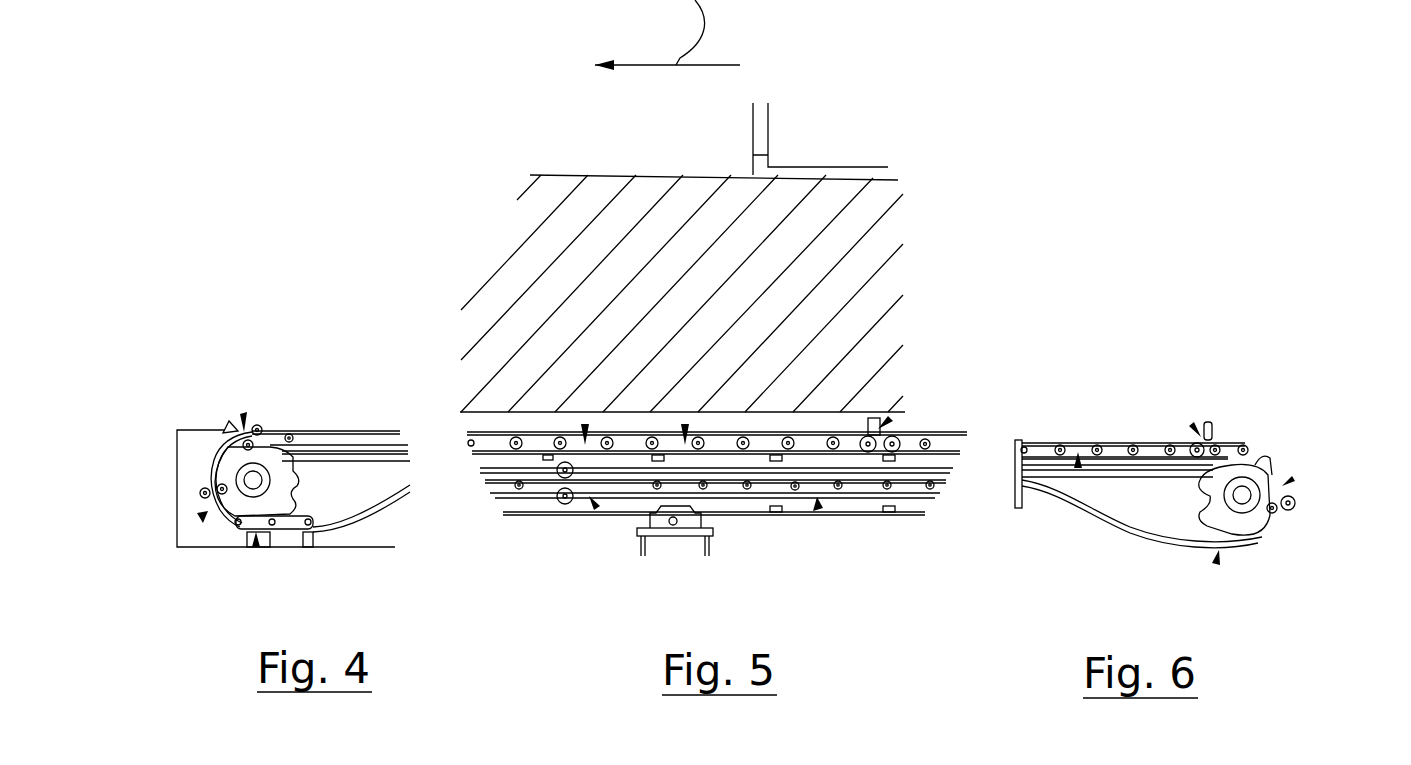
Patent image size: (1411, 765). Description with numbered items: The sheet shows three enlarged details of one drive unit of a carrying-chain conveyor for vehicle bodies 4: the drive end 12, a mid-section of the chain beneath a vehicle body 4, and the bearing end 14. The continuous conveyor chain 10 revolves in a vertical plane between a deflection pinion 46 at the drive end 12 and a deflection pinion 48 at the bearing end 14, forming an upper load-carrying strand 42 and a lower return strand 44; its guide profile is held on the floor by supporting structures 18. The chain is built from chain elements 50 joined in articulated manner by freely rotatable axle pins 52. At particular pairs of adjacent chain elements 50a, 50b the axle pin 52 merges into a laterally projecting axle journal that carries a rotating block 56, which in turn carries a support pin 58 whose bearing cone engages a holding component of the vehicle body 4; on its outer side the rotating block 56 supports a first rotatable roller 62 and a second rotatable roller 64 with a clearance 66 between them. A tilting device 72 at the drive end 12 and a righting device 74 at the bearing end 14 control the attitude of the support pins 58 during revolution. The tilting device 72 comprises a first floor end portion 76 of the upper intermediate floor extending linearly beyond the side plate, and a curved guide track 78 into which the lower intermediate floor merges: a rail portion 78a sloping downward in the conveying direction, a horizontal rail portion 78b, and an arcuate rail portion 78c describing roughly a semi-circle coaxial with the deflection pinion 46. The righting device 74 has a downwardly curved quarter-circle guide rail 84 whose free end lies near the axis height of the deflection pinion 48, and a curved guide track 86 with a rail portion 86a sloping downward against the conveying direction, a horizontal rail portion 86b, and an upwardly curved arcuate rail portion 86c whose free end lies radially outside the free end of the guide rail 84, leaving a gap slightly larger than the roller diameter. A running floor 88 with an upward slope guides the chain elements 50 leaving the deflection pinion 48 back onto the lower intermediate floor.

In FIG. 5, the vehicle body 4 is at (880, 202).
In FIG. 5, the conveyor chain 10 is at (585, 440).
In FIG. 6, the conveyor chain 10 is at (1078, 470).
In FIG. 4, the drive end 12 is at (265, 210).
In FIG. 6, the bearing end 14 is at (1188, 250).
In FIG. 5, the supporting structure 18 is at (691, 538).
In FIG. 5, the load-carrying strand 42 is at (686, 440).
In FIG. 5, the return strand 44 is at (820, 508).
In FIG. 4, the deflection pinion 46 is at (260, 425).
In FIG. 6, the deflection pinion 48 is at (1240, 447).
In FIG. 5, the chain element 50 is at (762, 518).
In FIG. 4, the chain element 50a is at (240, 440).
In FIG. 5, the chain element 50a is at (862, 300).
In FIG. 6, the chain element 50a is at (1178, 447).
In FIG. 4, the chain element 50b is at (273, 428).
In FIG. 5, the chain element 50b is at (915, 450).
In FIG. 6, the chain element 50b is at (1230, 447).
In FIG. 4, the axle pin 52 is at (271, 528).
In FIG. 5, the axle pin 52 is at (652, 437).
In FIG. 6, the axle pin 52 is at (1253, 447).
In FIG. 5, the rotating block 56 is at (585, 512).
In FIG. 4, the support pin 58 is at (241, 416).
In FIG. 5, the support pin 58 is at (884, 420).
In FIG. 6, the support pin 58 is at (1192, 431).
In FIG. 4, the first rotatable roller 62 is at (242, 438).
In FIG. 5, the first rotatable roller 62 is at (557, 465).
In FIG. 6, the first rotatable roller 62 is at (1193, 446).
In FIG. 4, the second rotatable roller 64 is at (257, 425).
In FIG. 5, the second rotatable roller 64 is at (897, 440).
In FIG. 6, the second rotatable roller 64 is at (1222, 446).
In FIG. 5, the clearance 66 is at (556, 502).
In FIG. 6, the clearance 66 is at (1292, 512).
In FIG. 4, the tilting device 72 is at (188, 278).
In FIG. 6, the righting device 74 is at (1285, 295).
In FIG. 4, the first floor end portion 76 is at (353, 437).
In FIG. 4, the curved guide track 78 is at (256, 540).
In FIG. 4, the rail portion 78a is at (378, 503).
In FIG. 4, the rail portion 78b is at (297, 535).
In FIG. 4, the arcuate rail portion 78c is at (213, 480).
In FIG. 6, the guide rail 84 is at (1262, 468).
In FIG. 6, the curved guide track 86 is at (1217, 565).
In FIG. 6, the rail portion 86a is at (1087, 513).
In FIG. 6, the rail portion 86b is at (1190, 542).
In FIG. 6, the arcuate rail portion 86c is at (1262, 545).
In FIG. 6, the running floor 88 is at (1140, 535).